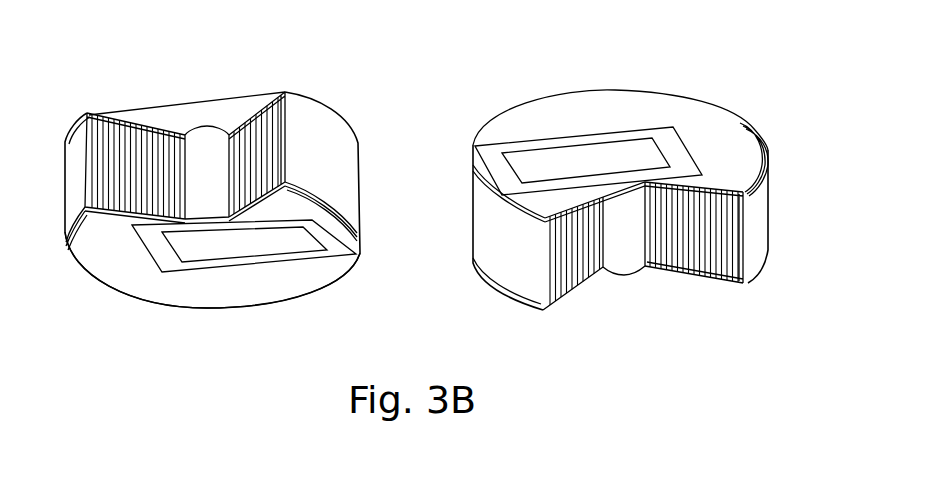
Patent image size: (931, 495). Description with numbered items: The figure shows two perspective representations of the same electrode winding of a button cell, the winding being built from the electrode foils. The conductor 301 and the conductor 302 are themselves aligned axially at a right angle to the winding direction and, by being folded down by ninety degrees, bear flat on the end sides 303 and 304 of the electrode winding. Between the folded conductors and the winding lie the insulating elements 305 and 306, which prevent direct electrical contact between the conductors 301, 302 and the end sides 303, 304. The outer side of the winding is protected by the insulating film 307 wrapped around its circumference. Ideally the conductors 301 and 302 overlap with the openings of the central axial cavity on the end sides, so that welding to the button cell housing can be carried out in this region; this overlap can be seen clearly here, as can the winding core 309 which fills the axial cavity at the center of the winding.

The conductor 301 is at (235, 242).
The conductor 302 is at (632, 153).
The end side 303 is at (572, 105).
The end side 304 is at (108, 250).
The insulating element 305 is at (193, 123).
The insulating element 306 is at (163, 260).
The insulating film 307 is at (323, 123).
The winding core 309 is at (630, 248).